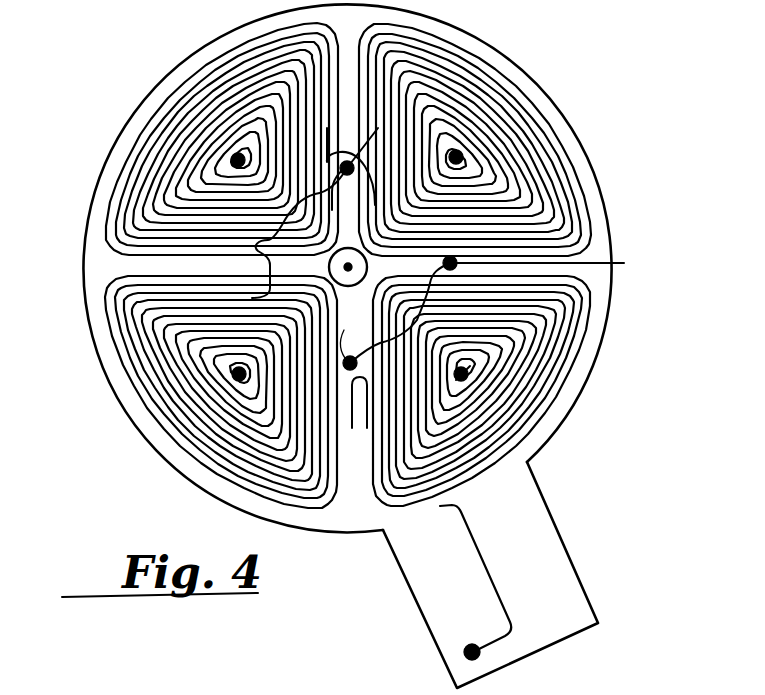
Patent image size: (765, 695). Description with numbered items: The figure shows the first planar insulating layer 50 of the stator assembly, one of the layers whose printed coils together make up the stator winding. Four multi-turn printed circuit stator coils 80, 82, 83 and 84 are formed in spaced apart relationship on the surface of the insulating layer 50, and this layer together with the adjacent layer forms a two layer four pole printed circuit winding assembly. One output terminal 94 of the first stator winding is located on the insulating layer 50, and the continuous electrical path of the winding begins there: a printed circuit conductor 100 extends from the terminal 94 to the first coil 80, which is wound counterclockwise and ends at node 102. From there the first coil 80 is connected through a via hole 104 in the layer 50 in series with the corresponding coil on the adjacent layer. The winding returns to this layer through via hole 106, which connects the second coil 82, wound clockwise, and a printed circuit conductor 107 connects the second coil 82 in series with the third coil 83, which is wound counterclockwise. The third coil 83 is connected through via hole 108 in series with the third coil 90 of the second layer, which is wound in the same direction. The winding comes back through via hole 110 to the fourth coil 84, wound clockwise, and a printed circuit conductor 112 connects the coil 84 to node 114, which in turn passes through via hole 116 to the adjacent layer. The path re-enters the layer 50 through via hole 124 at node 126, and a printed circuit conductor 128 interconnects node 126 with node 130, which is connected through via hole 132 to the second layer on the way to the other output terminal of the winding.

The first planar insulating layer 50 is at (605, 247).
The first multi-turn printed circuit coil 80 is at (607, 318).
The second coil of the first layer 82 is at (572, 138).
The third coil of the first layer 83 is at (130, 127).
The fourth coil of the first layer 84 is at (108, 345).
The third coil of the second layer 90 is at (405, 694).
The output terminal 94 is at (464, 651).
The printed circuit conductor 100 is at (490, 567).
The node 102 is at (468, 380).
The via hole 104 is at (464, 373).
The via hole 106 is at (460, 156).
The printed circuit conductor 107 is at (378, 128).
The via hole 108 is at (232, 161).
The via hole 110 is at (236, 376).
The printed circuit conductor 112 is at (257, 258).
The node 114 is at (355, 181).
The via hole 116 is at (330, 204).
The via hole 124 is at (555, 268).
The node 126 is at (444, 261).
The printed circuit conductor 128 is at (416, 312).
The node 130 is at (344, 361).
The via hole 132 is at (355, 335).